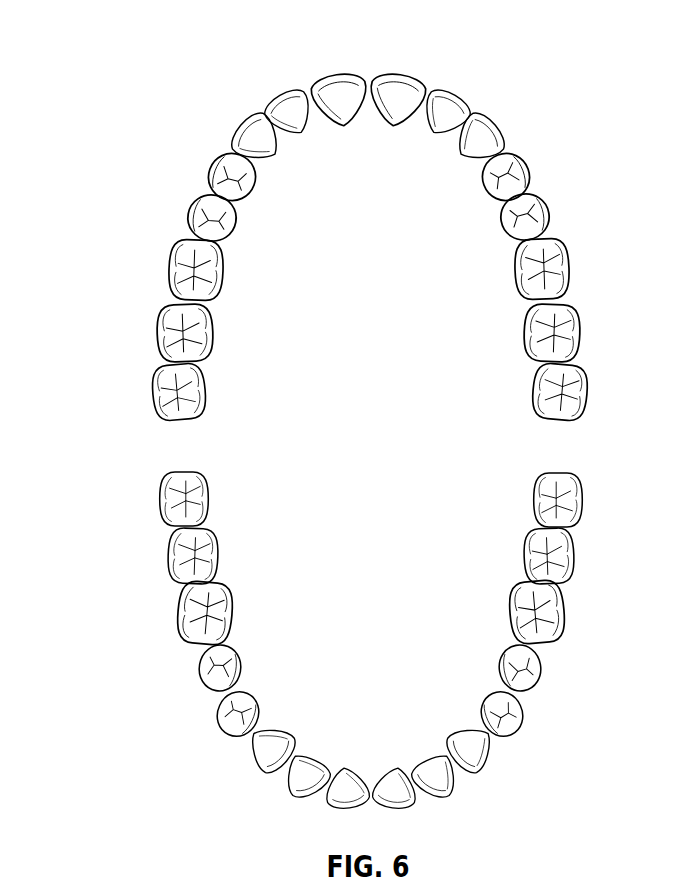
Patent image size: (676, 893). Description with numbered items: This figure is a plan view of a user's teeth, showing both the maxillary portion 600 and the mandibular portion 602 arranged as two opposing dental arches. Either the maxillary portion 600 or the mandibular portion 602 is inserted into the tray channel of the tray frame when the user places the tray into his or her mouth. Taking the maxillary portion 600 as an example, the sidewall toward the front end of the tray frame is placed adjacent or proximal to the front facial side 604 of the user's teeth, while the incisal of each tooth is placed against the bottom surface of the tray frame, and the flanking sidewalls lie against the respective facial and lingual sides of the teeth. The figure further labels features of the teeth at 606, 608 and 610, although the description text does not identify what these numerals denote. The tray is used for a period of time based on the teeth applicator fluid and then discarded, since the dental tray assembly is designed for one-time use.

The maxillary portion 600 is at (341, 219).
The mandibular portion 602 is at (390, 621).
The front facial side 604 is at (360, 70).
The central incisor 606 is at (322, 73).
The first molar 608 is at (162, 263).
The second premolar 610 is at (502, 248).